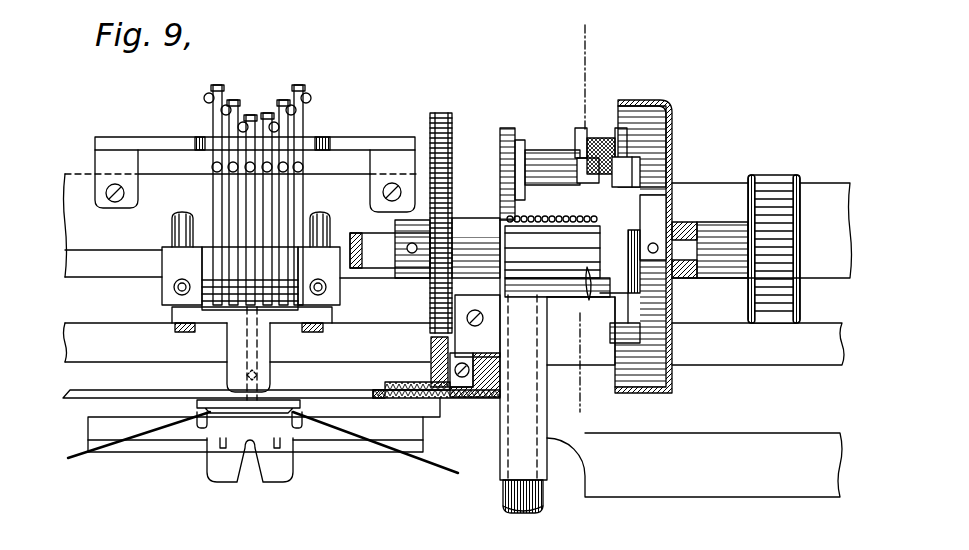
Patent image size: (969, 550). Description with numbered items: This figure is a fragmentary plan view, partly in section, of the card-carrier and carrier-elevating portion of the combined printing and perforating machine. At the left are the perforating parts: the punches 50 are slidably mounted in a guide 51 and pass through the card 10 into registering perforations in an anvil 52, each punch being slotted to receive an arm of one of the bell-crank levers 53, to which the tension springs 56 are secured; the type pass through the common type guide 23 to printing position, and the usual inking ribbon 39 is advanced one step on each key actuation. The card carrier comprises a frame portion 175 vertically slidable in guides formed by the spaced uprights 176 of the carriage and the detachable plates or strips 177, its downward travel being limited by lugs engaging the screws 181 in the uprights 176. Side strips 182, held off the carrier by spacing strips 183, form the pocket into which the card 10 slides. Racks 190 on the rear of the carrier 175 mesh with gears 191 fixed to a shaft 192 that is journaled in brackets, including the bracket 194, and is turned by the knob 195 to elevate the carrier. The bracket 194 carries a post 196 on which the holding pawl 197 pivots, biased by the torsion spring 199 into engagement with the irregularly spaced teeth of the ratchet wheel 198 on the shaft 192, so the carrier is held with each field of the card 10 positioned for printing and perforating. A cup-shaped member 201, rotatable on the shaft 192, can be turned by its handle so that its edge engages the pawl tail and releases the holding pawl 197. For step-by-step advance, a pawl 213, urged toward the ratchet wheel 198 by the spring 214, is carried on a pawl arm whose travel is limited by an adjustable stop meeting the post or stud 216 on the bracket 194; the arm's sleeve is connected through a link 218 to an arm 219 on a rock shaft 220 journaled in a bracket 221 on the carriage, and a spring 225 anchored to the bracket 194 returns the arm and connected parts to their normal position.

The card 10 is at (78, 402).
The type guide 23 is at (222, 470).
The inking ribbon 39 is at (70, 462).
The punches 50 is at (257, 375).
The guide 51 is at (232, 344).
The anvil 52 is at (200, 402).
The bell-crank levers 53 is at (220, 195).
The tension springs 56 is at (214, 166).
The frame portion 175 is at (447, 398).
The spaced uprights 176 is at (492, 364).
The plates or strips 177 is at (467, 403).
The screws 181 is at (437, 362).
The side strips 182 is at (375, 398).
The spacing strips 183 is at (398, 392).
The racks 190 is at (448, 392).
The gears 191 is at (457, 132).
The shaft 192 is at (365, 234).
The bracket 194 is at (464, 228).
The knob 195 is at (767, 197).
The post 196 is at (527, 163).
The holding pawl 197 is at (624, 140).
The ratchet wheel 198 is at (645, 165).
The torsion spring 199 is at (598, 130).
The cup-shaped member 201 is at (655, 103).
The pawl 213 is at (637, 312).
The spring 214 is at (640, 228).
The post or stud 216 is at (536, 136).
The link 218 is at (592, 300).
The arm 219 is at (563, 292).
The rock shaft 220 is at (525, 498).
The bracket 221 is at (541, 433).
The spring 225 is at (531, 217).